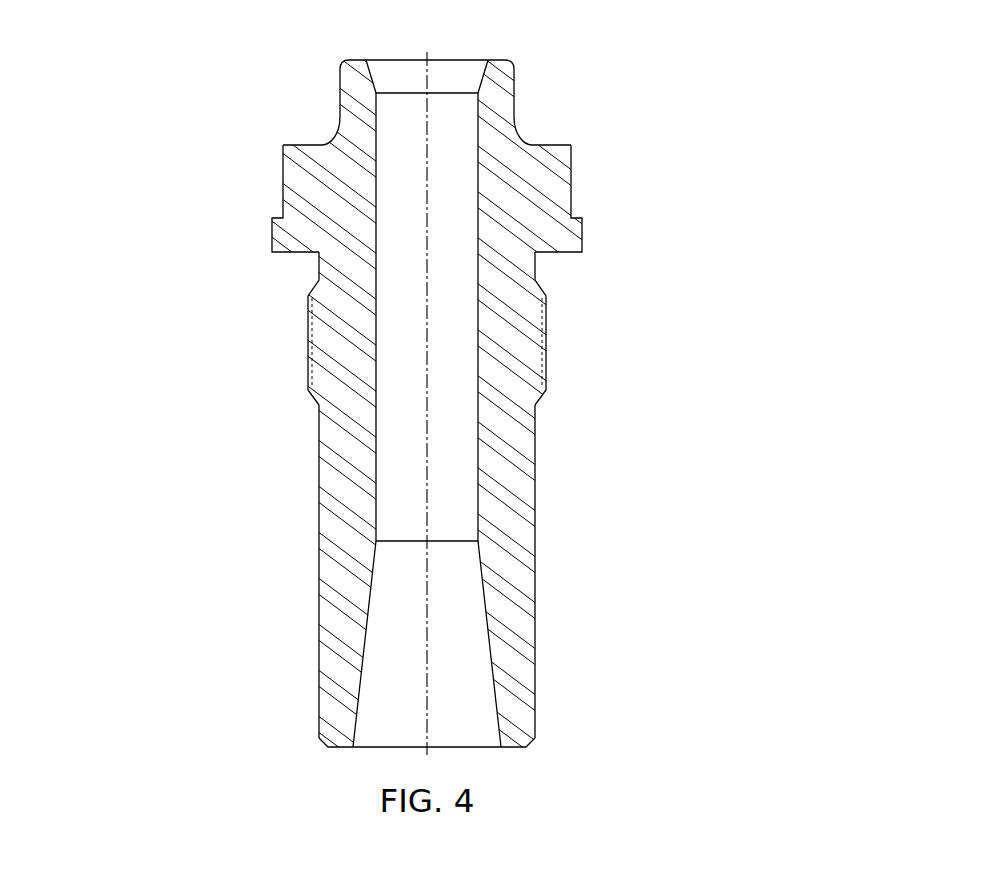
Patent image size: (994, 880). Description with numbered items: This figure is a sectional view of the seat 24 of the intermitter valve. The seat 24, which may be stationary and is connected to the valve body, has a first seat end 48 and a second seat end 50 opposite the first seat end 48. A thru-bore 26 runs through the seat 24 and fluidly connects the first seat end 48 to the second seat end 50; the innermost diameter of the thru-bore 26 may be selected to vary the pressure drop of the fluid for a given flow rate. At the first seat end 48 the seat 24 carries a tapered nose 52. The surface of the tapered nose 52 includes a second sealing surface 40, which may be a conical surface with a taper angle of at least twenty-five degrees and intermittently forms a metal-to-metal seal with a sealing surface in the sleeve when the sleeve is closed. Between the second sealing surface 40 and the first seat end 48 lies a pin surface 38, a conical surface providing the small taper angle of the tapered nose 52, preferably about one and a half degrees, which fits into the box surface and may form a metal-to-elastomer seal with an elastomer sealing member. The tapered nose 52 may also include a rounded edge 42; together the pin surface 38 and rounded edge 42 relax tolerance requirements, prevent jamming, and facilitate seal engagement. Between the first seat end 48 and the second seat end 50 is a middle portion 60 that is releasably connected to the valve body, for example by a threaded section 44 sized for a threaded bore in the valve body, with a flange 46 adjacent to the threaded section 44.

The seat 24 is at (178, 364).
The thru-bore 26 is at (442, 493).
The pin surface 38 is at (513, 92).
The second sealing surface 40 is at (517, 130).
The rounded edge 42 is at (337, 63).
The threaded section 44 is at (307, 337).
The flange 46 is at (288, 203).
The first seat end 48 is at (288, 72).
The second seat end 50 is at (275, 741).
The tapered nose 52 is at (690, 147).
The middle portion 60 is at (585, 339).